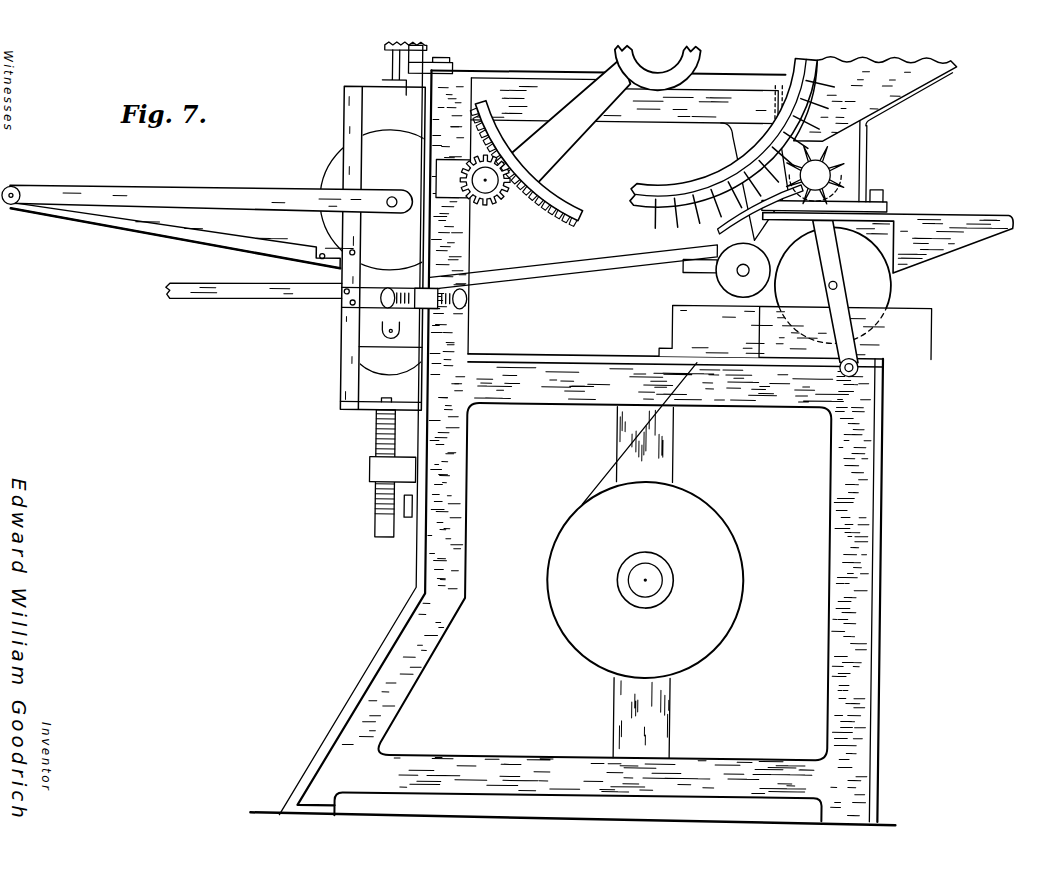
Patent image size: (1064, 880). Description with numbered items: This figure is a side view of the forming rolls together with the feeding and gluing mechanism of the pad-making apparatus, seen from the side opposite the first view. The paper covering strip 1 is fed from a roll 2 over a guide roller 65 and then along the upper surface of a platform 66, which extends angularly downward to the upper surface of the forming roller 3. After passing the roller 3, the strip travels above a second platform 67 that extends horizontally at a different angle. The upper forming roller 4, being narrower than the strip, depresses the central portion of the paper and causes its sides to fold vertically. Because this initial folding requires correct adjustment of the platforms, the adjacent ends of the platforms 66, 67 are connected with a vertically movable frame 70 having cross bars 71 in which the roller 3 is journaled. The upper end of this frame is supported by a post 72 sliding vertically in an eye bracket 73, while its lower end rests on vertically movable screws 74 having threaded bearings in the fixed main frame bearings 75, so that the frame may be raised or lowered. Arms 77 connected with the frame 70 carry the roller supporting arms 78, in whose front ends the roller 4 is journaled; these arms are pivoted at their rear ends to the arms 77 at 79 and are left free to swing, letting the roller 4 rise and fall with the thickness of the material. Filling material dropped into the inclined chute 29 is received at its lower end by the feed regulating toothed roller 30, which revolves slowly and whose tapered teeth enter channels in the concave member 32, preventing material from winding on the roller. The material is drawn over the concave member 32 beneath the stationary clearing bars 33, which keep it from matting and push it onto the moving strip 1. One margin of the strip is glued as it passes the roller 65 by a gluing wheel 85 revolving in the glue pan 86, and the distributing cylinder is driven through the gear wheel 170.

The paper covering strip 1 is at (639, 433).
The roll 2 is at (645, 582).
The forming roller 3 is at (389, 329).
The forming roller 4 is at (390, 200).
The inclined chute 29 is at (936, 70).
The feed regulating toothed roller 30 is at (815, 175).
The concave member 32 is at (716, 230).
The stationary clearing bars 33 is at (732, 143).
The guide roller 65 is at (726, 280).
The platform 66 is at (646, 265).
The platform 67 is at (258, 298).
The vertically movable frame 70 is at (350, 134).
The cross bars 71 is at (356, 333).
The post 72 is at (388, 68).
The eye bracket 73 is at (380, 49).
The vertically movable screws 74 is at (381, 473).
The fixed main frame bearings 75 is at (380, 469).
The arms 77 is at (242, 240).
The roller supporting arms 78 is at (258, 198).
The pivot 79 is at (13, 211).
The gluing wheel 85 is at (833, 298).
The glue pan 86 is at (795, 332).
The gear wheel 170 is at (545, 210).